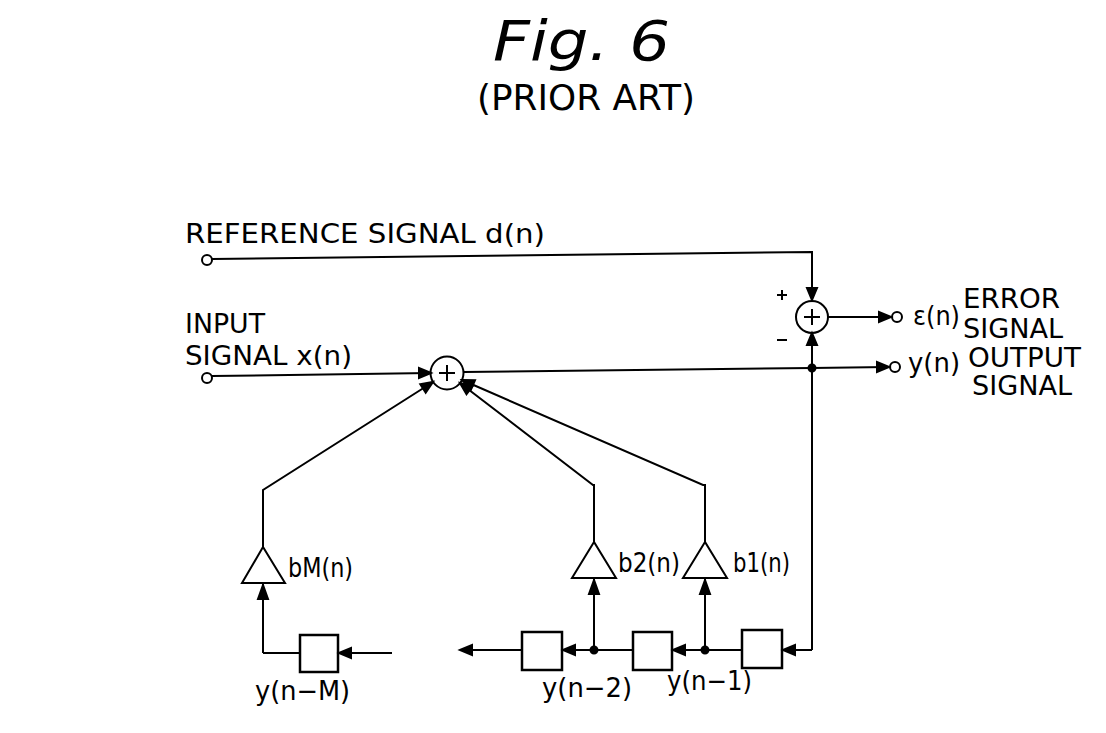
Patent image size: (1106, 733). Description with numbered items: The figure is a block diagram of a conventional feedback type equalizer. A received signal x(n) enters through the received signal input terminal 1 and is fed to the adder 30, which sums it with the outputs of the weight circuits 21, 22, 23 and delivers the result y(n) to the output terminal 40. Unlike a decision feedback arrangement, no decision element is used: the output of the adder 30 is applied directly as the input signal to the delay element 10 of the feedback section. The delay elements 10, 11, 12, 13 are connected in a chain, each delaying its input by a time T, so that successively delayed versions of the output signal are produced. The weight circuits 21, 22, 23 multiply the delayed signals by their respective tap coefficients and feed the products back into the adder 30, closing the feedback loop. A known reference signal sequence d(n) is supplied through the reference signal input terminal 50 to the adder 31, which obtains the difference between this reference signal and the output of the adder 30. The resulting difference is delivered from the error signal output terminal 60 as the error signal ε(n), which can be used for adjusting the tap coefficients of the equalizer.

The received signal input terminal 1 is at (210, 384).
The delay element 10 is at (784, 666).
The delay element 11 is at (652, 672).
The delay element 12 is at (520, 666).
The delay element 13 is at (340, 668).
The weight circuit 21 is at (712, 550).
The weight circuit 22 is at (577, 563).
The weight circuit 23 is at (270, 548).
The adder 30 is at (458, 360).
The adder 31 is at (796, 322).
The output terminal 40 is at (893, 373).
The reference signal input terminal 50 is at (210, 266).
The error signal output terminal 60 is at (896, 311).